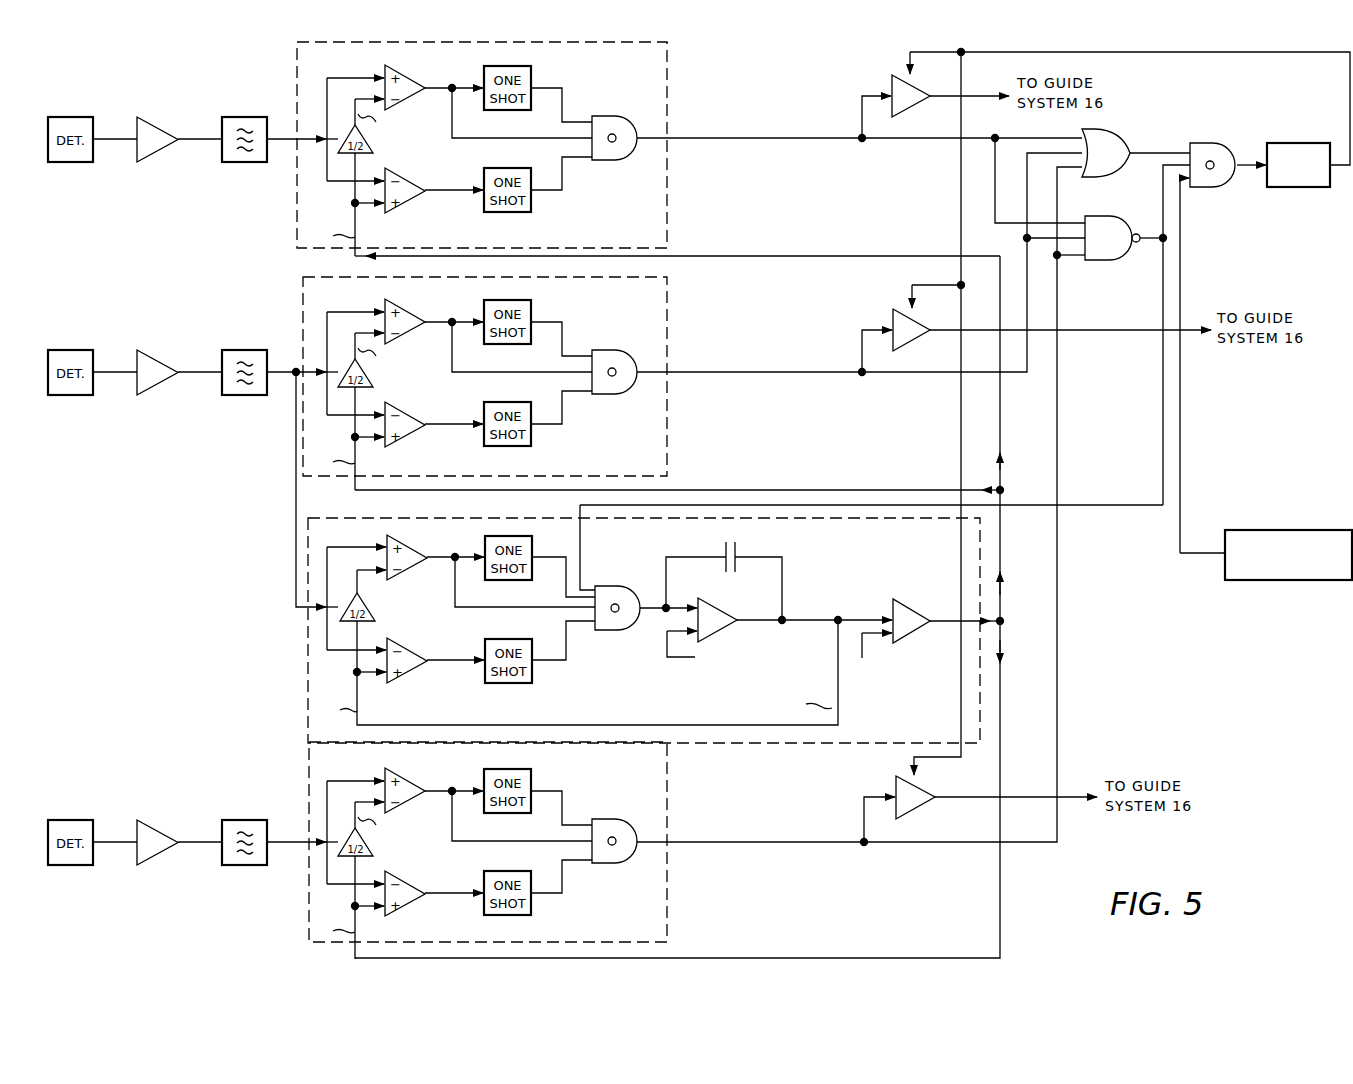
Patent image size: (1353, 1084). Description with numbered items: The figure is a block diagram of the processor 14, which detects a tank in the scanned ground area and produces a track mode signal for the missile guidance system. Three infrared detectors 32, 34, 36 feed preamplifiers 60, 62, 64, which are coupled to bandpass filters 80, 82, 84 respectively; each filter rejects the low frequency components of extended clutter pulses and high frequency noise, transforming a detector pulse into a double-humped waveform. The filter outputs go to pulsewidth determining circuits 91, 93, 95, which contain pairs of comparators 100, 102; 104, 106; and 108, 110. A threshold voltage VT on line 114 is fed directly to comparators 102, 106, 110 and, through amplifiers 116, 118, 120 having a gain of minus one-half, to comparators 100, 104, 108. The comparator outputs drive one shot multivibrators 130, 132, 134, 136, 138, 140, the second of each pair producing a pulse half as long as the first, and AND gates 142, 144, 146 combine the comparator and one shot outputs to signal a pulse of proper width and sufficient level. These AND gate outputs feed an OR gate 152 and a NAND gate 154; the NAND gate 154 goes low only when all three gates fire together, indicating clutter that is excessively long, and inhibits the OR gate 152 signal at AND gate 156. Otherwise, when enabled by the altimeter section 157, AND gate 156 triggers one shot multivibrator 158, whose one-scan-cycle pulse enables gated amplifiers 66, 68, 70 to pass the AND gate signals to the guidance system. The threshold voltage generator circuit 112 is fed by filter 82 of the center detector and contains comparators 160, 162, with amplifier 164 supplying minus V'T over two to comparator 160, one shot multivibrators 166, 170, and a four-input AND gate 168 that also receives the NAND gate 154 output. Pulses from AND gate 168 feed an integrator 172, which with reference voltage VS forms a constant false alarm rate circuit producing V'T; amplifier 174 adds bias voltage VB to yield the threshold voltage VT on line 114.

The processor 14 is at (690, 74).
The infrared detector 32 is at (69, 117).
The infrared detector 34 is at (69, 350).
The infrared detector 36 is at (69, 820).
The preamplifier 60 is at (158, 119).
The preamplifier 62 is at (158, 352).
The preamplifier 64 is at (158, 822).
The bandpass filter 80 is at (242, 117).
The bandpass filter 82 is at (242, 350).
The bandpass filter 84 is at (242, 820).
The pulsewidth determining circuit 91 is at (503, 149).
The pulsewidth determining circuit 93 is at (503, 383).
The pulsewidth determining circuit 95 is at (510, 850).
The comparator 100 is at (405, 79).
The comparator 102 is at (406, 182).
The comparator 104 is at (419, 314).
The comparator 106 is at (419, 418).
The comparator 108 is at (419, 783).
The comparator 110 is at (419, 887).
The threshold voltage generator circuit 112 is at (818, 748).
The line 114 is at (405, 258).
The amplifier 116 is at (371, 147).
The amplifier 118 is at (378, 378).
The amplifier 120 is at (378, 847).
The one shot multivibrator 130 is at (531, 76).
The one shot multivibrator 132 is at (512, 168).
The one shot multivibrator 134 is at (531, 313).
The one shot multivibrator 136 is at (521, 407).
The one shot multivibrator 138 is at (531, 782).
The one shot multivibrator 140 is at (521, 876).
The AND gate 142 is at (615, 116).
The AND gate 144 is at (619, 356).
The AND gate 146 is at (619, 825).
The gated amplifier 66 is at (907, 106).
The gated amplifier 68 is at (905, 340).
The gated amplifier 70 is at (912, 806).
The OR gate 152 is at (1115, 134).
The NAND gate 154 is at (1097, 218).
The AND gate 156 is at (1211, 143).
The altimeter section 157 is at (1245, 530).
The one shot multivibrator 158 is at (1288, 143).
The comparator 160 is at (406, 550).
The comparator 162 is at (406, 652).
The amplifier 164 is at (366, 606).
The one shot multivibrator 166 is at (530, 545).
The AND gate 168 is at (607, 586).
The one shot multivibrator 170 is at (510, 645).
The integrator 172 is at (794, 547).
The amplifier 174 is at (902, 603).